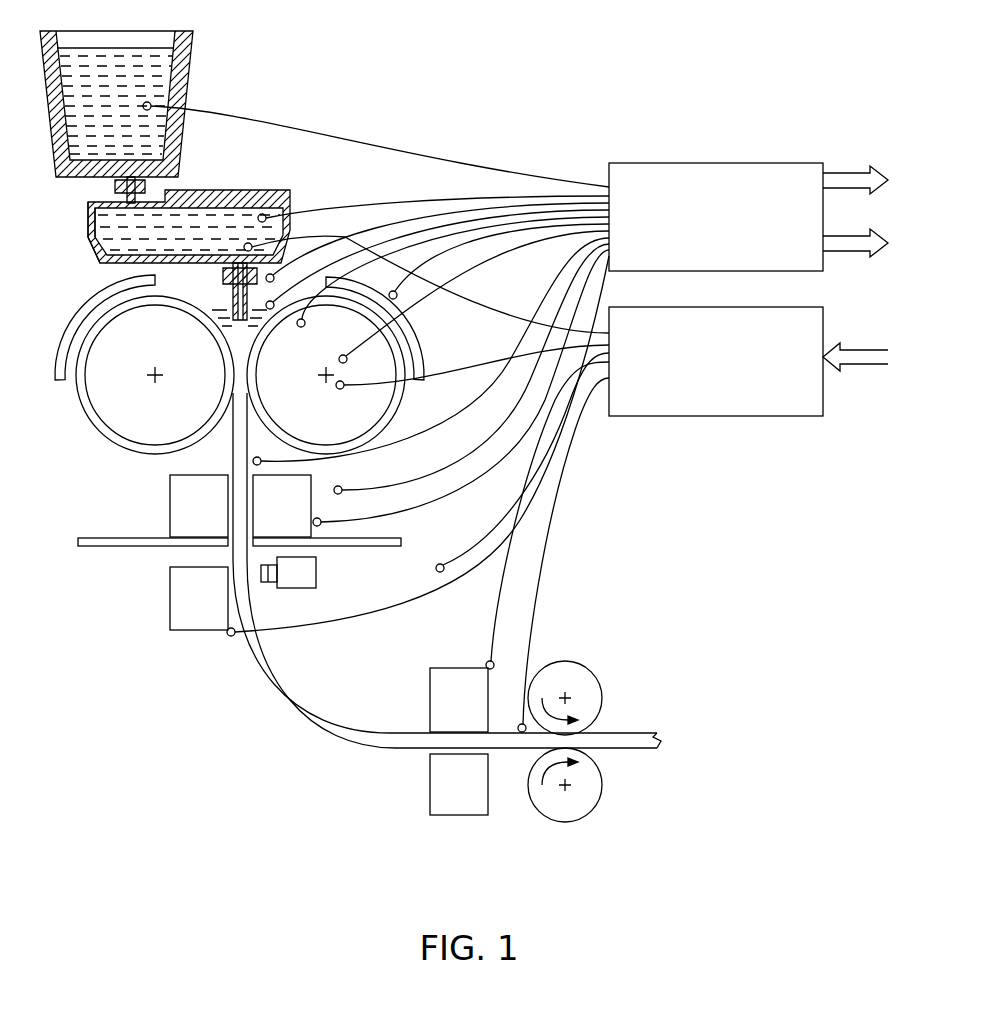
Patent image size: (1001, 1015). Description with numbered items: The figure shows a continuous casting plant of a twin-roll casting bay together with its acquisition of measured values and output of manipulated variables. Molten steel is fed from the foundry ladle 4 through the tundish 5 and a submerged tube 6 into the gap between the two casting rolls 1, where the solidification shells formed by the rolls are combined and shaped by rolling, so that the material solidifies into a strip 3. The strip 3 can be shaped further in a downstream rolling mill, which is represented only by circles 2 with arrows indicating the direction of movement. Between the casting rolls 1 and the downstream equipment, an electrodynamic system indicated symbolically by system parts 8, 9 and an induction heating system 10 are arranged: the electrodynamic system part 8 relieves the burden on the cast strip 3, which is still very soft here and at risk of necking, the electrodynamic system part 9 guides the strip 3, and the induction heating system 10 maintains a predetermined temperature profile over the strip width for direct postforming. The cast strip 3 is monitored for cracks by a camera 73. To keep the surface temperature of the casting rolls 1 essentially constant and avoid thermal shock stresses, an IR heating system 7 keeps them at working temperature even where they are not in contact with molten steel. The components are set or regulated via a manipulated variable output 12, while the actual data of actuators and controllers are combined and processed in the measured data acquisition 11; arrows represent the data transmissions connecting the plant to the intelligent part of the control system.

The casting rolls 1 is at (103, 403).
The circles representing rolling mill 2 is at (596, 776).
The strip 3 is at (297, 707).
The foundry ladle 4 is at (168, 55).
The tundish 5 is at (215, 212).
The submerged tube 6 is at (88, 215).
The IR heating system 7 is at (428, 357).
The electrodynamic system part 8 is at (178, 497).
The electrodynamic system part 9 is at (182, 598).
The induction heating system 10 is at (438, 780).
The measured data acquisition 11 is at (762, 163).
The manipulated variable output 12 is at (647, 416).
The camera 73 is at (310, 583).